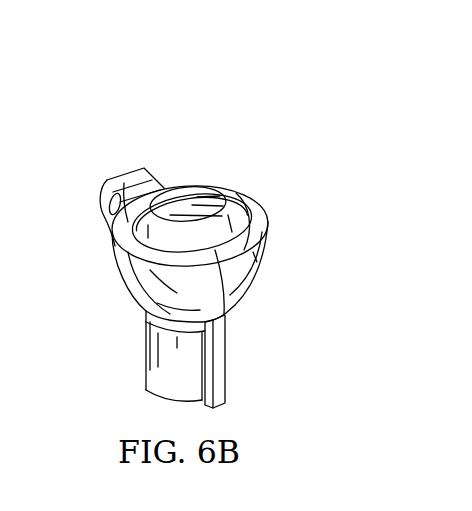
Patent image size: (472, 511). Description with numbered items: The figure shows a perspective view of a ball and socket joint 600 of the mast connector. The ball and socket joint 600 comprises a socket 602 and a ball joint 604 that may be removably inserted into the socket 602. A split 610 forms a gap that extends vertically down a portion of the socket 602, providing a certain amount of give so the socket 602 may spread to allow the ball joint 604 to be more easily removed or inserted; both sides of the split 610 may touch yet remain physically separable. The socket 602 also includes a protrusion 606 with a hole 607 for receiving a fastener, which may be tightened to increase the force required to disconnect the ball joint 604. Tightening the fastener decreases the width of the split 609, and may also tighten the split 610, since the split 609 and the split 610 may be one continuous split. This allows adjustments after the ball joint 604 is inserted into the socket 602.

The ball and socket joint 600 is at (126, 103).
The socket 602 is at (140, 277).
The ball joint 604 is at (187, 200).
The protrusion 606 is at (107, 181).
The hole 607 is at (114, 207).
The split 609 is at (137, 181).
The split 610 is at (233, 294).